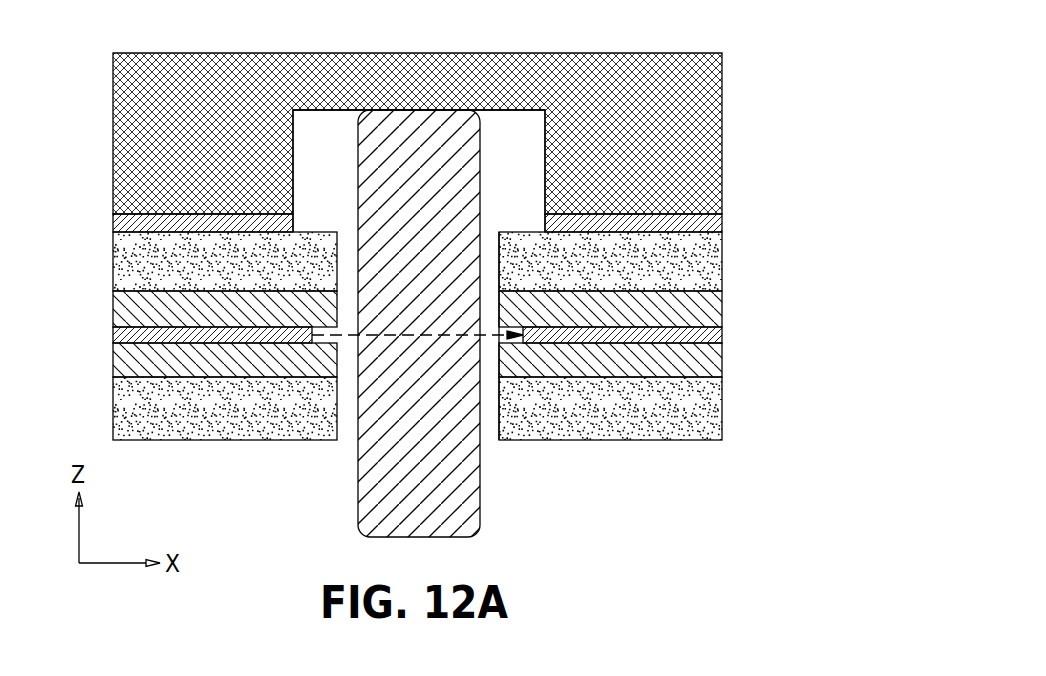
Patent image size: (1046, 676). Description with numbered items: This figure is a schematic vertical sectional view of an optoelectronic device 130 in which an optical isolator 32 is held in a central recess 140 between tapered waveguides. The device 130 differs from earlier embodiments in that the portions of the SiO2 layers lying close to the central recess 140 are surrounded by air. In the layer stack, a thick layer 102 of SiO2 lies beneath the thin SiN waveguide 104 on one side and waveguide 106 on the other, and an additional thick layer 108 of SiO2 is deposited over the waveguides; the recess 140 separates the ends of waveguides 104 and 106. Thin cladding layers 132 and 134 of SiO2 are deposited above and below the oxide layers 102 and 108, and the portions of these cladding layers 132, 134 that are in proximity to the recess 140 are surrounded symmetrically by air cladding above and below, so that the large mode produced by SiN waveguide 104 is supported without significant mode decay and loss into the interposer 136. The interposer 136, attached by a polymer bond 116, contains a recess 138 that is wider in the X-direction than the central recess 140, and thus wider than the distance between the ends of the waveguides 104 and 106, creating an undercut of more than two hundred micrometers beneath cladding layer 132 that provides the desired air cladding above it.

The optoelectronic device 130 is at (765, 72).
The interposer 136 is at (722, 108).
The recess 138 is at (530, 164).
The polymer bond 116 is at (722, 222).
The cladding layer 132 is at (722, 244).
The thick layer of SiO2 108 is at (714, 300).
The tapered waveguide 106 is at (722, 335).
The tapered waveguide 104 is at (113, 335).
The thick layer of SiO2 102 is at (714, 357).
The cladding layer 134 is at (722, 412).
The optical isolator 32 is at (377, 516).
The central recess 140 is at (487, 413).